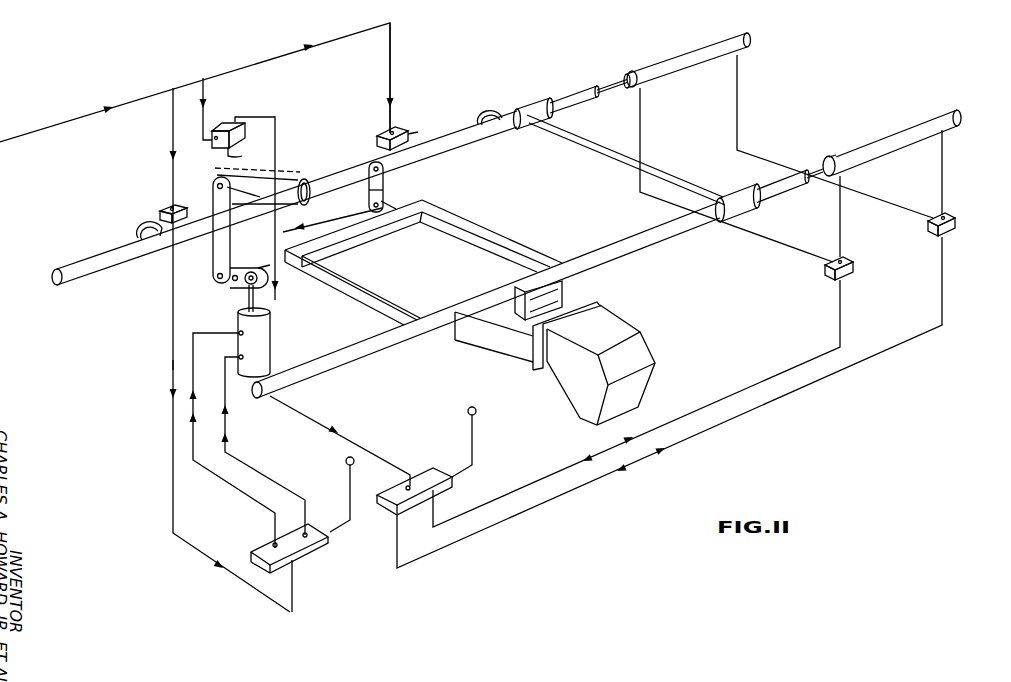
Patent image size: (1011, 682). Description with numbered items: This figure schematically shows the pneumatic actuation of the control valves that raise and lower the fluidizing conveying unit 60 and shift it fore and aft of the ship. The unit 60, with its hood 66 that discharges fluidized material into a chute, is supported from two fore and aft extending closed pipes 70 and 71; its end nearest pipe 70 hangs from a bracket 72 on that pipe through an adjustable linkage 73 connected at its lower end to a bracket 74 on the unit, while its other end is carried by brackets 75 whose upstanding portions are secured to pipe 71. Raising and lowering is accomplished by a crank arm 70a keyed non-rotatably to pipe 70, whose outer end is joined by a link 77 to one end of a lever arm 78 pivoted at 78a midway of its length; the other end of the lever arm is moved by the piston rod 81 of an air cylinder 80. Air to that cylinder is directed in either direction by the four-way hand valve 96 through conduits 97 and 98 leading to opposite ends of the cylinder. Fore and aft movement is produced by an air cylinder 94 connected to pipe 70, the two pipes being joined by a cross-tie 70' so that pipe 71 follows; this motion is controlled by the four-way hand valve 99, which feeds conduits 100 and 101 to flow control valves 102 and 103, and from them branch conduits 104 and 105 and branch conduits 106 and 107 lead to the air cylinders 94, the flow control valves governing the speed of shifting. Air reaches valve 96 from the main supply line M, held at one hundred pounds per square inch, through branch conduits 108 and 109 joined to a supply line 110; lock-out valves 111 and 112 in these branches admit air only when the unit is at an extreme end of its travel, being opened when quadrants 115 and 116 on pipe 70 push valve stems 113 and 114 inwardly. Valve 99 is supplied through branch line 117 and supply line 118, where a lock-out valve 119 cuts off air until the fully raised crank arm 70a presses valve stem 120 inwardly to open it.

The main supply line M is at (66, 118).
The fluidizing conveying unit 60 is at (544, 250).
The hood 66 is at (640, 352).
The pipe 70 is at (401, 166).
The cross-tie 70' is at (626, 160).
The crank arm 70a is at (262, 184).
The pipe 71 is at (386, 346).
The bracket 72 is at (366, 163).
The adjustable linkage 73 is at (368, 193).
The bracket 74 is at (396, 206).
The bracket 75 is at (562, 289).
The link 77 is at (212, 272).
The lever arm 78 is at (244, 270).
The pivot 78a is at (234, 283).
The air cylinder 80 is at (271, 336).
The piston rod 81 is at (256, 302).
The air cylinder 94 is at (640, 72).
The four-way hand valve 96 is at (258, 548).
The conduit 97 is at (192, 450).
The conduit 98 is at (300, 492).
The four-way hand valve 99 is at (446, 490).
The conduit 100 is at (546, 480).
The conduit 101 is at (604, 478).
The flow control valve 102 is at (852, 272).
The flow control valve 103 is at (956, 232).
The branch conduit 104 is at (838, 234).
The branch conduit 105 is at (944, 194).
The branch conduit 106 is at (752, 236).
The branch conduit 107 is at (878, 204).
The branch conduit 108 is at (172, 136).
The branch conduit 109 is at (392, 68).
The supply line 110 is at (170, 362).
The lock-out valve 111 is at (170, 206).
The lock-out valve 112 is at (380, 130).
The valve stem 113 is at (160, 215).
The valve stem 114 is at (412, 132).
The quadrant 115 is at (136, 234).
The quadrant 116 is at (480, 112).
The branch line 117 is at (206, 120).
The supply line 118 is at (346, 428).
The lock-out valve 119 is at (238, 122).
The valve stem 120 is at (253, 208).